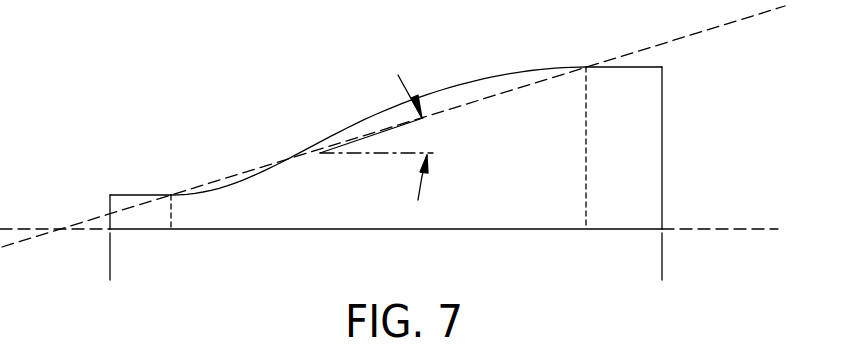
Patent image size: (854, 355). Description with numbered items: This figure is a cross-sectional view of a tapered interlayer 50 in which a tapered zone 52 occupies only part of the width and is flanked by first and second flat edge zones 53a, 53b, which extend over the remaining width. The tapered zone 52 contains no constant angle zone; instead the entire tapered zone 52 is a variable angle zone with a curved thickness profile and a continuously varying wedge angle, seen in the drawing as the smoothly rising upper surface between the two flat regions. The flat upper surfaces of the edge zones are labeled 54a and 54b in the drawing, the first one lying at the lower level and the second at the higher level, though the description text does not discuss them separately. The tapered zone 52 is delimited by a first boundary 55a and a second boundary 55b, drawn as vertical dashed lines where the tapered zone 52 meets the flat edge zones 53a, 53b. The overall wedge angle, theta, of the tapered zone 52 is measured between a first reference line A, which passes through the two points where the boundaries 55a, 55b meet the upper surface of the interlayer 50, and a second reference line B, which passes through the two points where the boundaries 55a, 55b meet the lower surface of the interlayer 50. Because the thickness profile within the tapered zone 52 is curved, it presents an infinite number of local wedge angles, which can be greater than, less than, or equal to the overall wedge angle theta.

The interlayer 50 is at (386, 169).
The tapered zone 52 is at (586, 233).
The first flat edge zone 53a is at (171, 273).
The second flat edge zone 53b is at (662, 273).
The first flat surface 54a is at (110, 213).
The second flat surface 54b is at (662, 145).
The first boundary 55a is at (171, 213).
The second boundary 55b is at (586, 130).
The first reference line A is at (723, 23).
The second reference line B is at (732, 229).